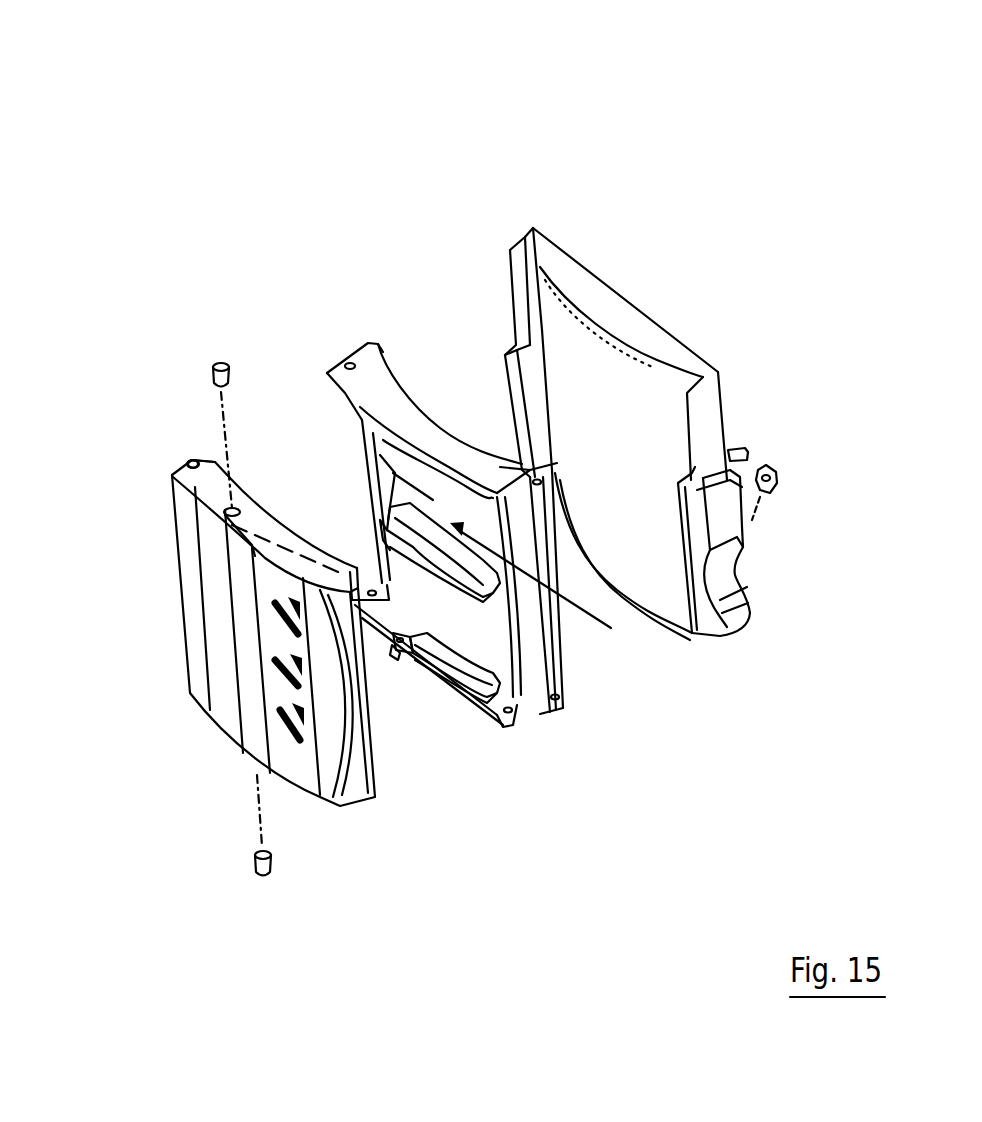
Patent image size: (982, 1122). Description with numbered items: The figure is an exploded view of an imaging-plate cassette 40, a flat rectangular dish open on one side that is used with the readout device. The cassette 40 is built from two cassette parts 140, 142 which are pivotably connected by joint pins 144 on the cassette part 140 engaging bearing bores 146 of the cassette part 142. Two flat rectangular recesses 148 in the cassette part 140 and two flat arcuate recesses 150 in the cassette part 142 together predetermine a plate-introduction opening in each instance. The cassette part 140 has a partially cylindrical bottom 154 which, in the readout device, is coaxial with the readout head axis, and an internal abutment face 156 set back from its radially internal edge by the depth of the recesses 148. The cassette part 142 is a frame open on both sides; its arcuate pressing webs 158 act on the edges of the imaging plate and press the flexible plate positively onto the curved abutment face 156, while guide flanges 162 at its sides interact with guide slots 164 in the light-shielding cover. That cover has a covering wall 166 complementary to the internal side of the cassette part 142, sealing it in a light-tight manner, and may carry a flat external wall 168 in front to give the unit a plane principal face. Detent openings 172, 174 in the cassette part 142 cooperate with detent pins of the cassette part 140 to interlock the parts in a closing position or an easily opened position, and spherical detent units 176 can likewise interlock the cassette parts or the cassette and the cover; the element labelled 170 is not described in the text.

The cassette 40 is at (488, 172).
The cassette part 140 is at (316, 802).
The cassette part 142 is at (532, 730).
The joint pins 144 is at (193, 465).
The bearing bores 146 is at (338, 360).
The flat rectangular recesses 148 is at (378, 760).
The flat arcuate recesses 150 is at (471, 700).
The partially cylindrical bottom 154 is at (598, 628).
The internal abutment face 156 is at (310, 553).
The arcuate pressing webs 158 is at (437, 560).
The guide flanges 162 is at (556, 530).
The guide slots 164 is at (540, 402).
The covering wall 166 is at (595, 316).
The flat external wall 168 is at (650, 318).
The lug 170 is at (388, 656).
The detent openings 172 is at (425, 612).
The detent openings 174 is at (220, 358).
The spherical detent units 176 is at (750, 452).